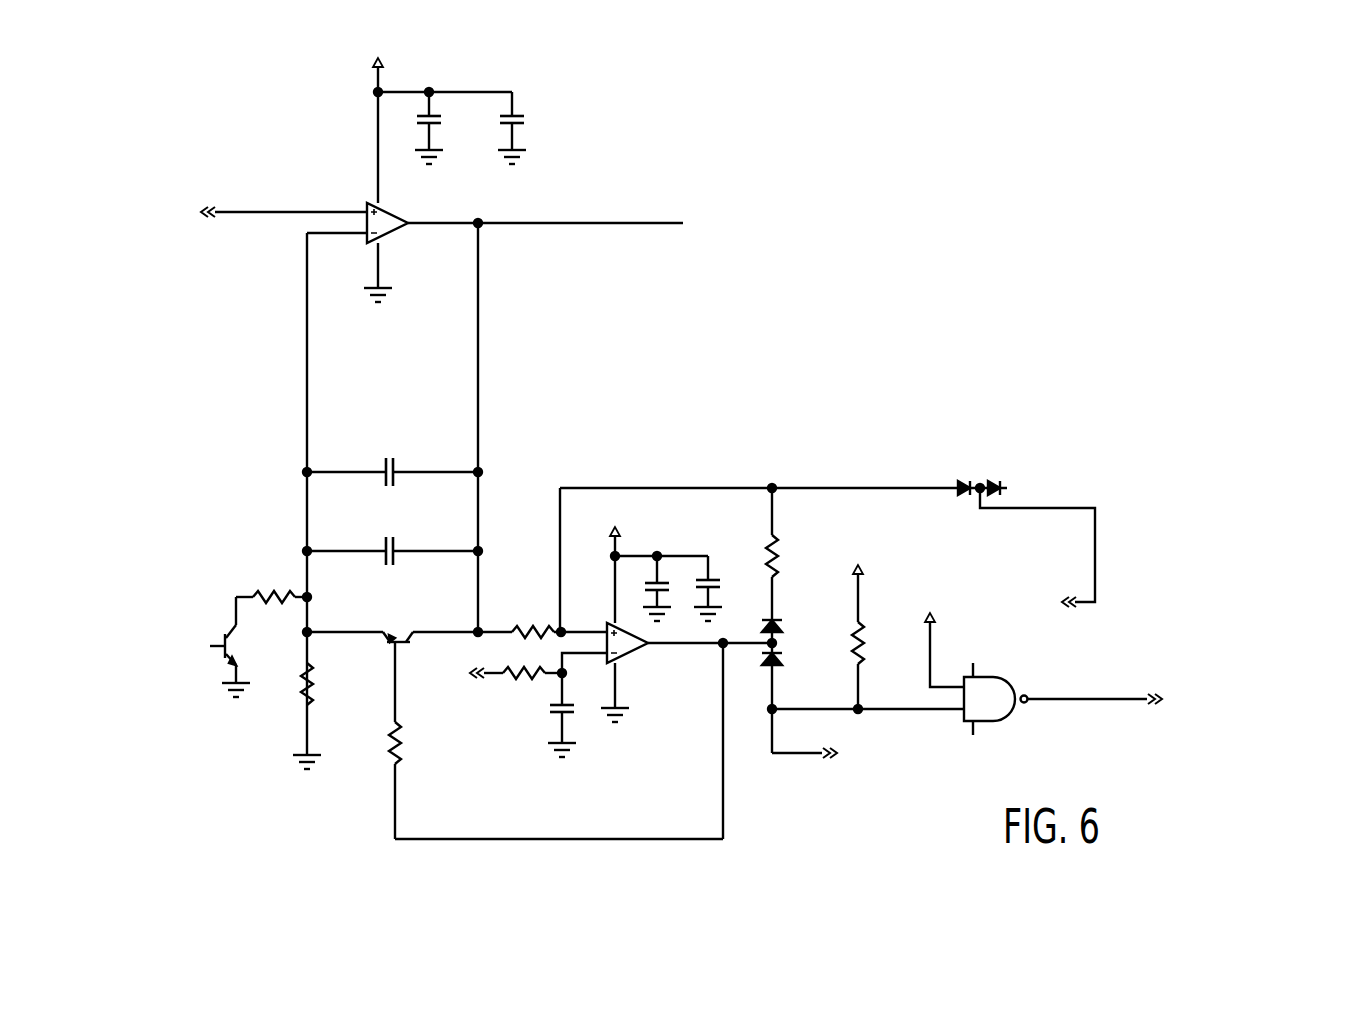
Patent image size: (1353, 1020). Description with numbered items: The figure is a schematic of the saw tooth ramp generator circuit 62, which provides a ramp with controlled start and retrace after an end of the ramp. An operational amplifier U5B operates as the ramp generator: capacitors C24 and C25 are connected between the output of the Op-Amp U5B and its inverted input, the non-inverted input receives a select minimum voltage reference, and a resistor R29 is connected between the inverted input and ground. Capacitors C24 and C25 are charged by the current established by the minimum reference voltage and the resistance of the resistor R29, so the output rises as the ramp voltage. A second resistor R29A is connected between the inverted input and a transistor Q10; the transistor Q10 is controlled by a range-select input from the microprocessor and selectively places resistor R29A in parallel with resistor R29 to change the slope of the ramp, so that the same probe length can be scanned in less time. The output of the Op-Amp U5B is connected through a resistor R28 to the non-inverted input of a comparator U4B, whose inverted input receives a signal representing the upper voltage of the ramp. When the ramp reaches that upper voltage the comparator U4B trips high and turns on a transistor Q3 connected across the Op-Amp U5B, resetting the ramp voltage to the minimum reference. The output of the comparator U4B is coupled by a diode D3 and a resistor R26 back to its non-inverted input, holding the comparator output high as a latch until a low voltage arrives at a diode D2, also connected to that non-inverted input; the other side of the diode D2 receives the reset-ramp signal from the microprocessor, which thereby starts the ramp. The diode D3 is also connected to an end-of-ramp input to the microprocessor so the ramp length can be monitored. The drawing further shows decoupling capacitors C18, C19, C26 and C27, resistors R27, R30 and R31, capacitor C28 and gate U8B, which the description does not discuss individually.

The saw tooth ramp generator circuit 62 is at (625, 391).
The capacitor C18 is at (448, 128).
The capacitor C19 is at (531, 128).
The operational amplifier U5B is at (399, 245).
The capacitor C24 is at (392, 478).
The capacitor C25 is at (392, 558).
The second resistor R29A is at (273, 582).
The transistor Q10 is at (245, 647).
The resistor R29 is at (328, 684).
The transistor Q3 is at (398, 630).
The resistor R28 is at (533, 617).
The resistor R31 is at (414, 720).
The resistor R30 is at (518, 659).
The capacitor C28 is at (543, 715).
The comparator U4B is at (638, 639).
The capacitor C26 is at (665, 580).
The capacitor C27 is at (729, 588).
The resistor R26 is at (791, 544).
The diode D3 is at (788, 645).
The resistor R27 is at (878, 641).
The NAND gate U8B is at (996, 699).
The diode D2 is at (975, 470).